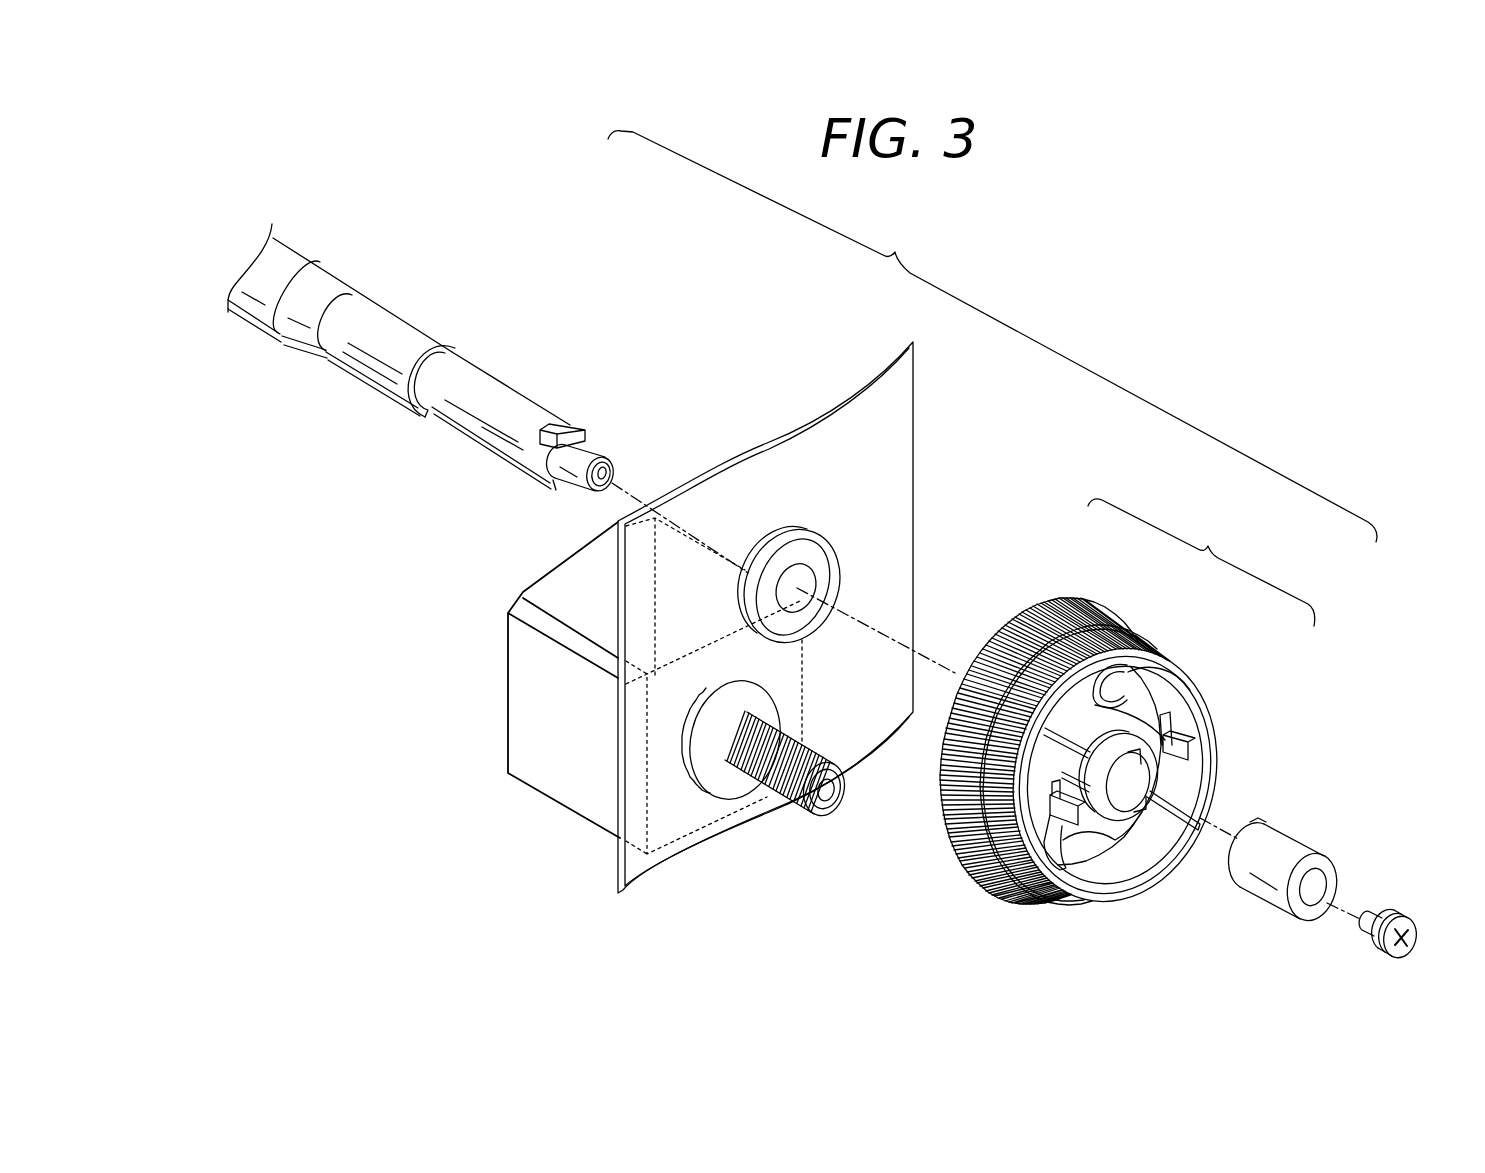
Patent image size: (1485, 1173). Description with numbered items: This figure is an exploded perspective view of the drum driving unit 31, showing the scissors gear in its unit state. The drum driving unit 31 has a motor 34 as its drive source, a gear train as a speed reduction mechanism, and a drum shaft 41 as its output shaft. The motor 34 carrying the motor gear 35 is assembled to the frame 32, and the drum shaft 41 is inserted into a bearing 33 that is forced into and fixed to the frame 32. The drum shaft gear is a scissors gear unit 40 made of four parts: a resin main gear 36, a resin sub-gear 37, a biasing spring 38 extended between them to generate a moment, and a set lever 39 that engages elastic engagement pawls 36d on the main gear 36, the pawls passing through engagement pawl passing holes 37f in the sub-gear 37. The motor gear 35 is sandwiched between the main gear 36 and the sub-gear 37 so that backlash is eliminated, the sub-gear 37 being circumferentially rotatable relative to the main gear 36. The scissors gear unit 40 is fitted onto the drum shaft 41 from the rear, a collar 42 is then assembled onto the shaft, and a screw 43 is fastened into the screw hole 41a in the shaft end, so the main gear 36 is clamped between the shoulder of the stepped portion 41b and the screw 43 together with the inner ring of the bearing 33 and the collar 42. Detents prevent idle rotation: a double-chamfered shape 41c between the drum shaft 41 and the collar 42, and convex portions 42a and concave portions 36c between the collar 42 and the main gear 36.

The drum driving unit 31 is at (992, 336).
The frame 32 is at (882, 432).
The bearing 33 is at (802, 590).
The motor 34 is at (585, 800).
The motor gear 35 is at (775, 795).
The main gear 36 is at (1075, 628).
The concave portions 36c is at (1124, 805).
The engagement pawls 36d is at (1190, 744).
The sub-gear 37 is at (1130, 634).
The engagement pawl passing holes 37f is at (1170, 704).
The biasing spring 38 is at (1163, 712).
The set lever 39 is at (1153, 713).
The scissors gear unit 40 is at (1201, 562).
The drum shaft 41 is at (392, 330).
The screw hole 41a is at (618, 470).
The stepped portion 41b is at (450, 355).
The double-chamfered shape 41c is at (565, 428).
The collar 42 is at (1292, 847).
The convex portions 42a is at (1252, 820).
The screw 43 is at (1407, 923).